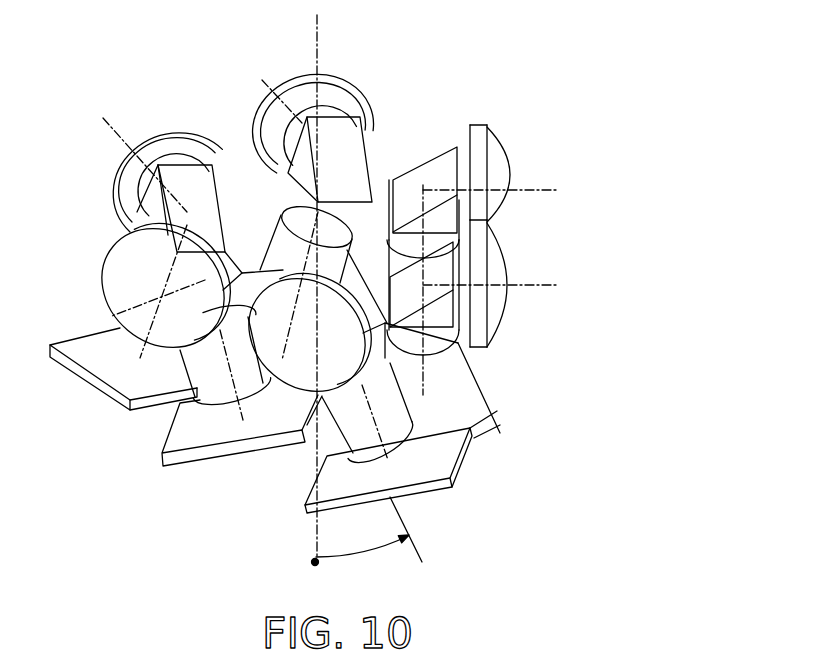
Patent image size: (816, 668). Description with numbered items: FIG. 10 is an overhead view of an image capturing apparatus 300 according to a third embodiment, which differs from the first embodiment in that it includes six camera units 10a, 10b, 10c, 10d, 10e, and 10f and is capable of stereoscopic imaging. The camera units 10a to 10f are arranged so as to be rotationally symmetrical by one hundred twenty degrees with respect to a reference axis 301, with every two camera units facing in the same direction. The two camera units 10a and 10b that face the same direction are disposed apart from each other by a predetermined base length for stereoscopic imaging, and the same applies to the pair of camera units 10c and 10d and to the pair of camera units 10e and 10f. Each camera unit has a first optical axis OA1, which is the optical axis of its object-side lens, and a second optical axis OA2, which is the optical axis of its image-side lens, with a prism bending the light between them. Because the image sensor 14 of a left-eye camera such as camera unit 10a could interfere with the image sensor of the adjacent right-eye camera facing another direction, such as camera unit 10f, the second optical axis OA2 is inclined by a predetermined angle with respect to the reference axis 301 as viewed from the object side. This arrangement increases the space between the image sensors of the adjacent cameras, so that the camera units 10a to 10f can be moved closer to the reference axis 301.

The image capturing apparatus 300 is at (103, 45).
The reference axis 301 is at (318, 47).
The camera unit 10a is at (433, 490).
The camera unit 10b is at (212, 457).
The camera unit 10c is at (113, 167).
The camera unit 10d is at (298, 80).
The camera unit 10e is at (503, 150).
The camera unit 10f is at (505, 340).
The first optical axis OA1 is at (540, 285).
The second optical axis OA2 is at (415, 368).
The image sensor 14 is at (500, 437).